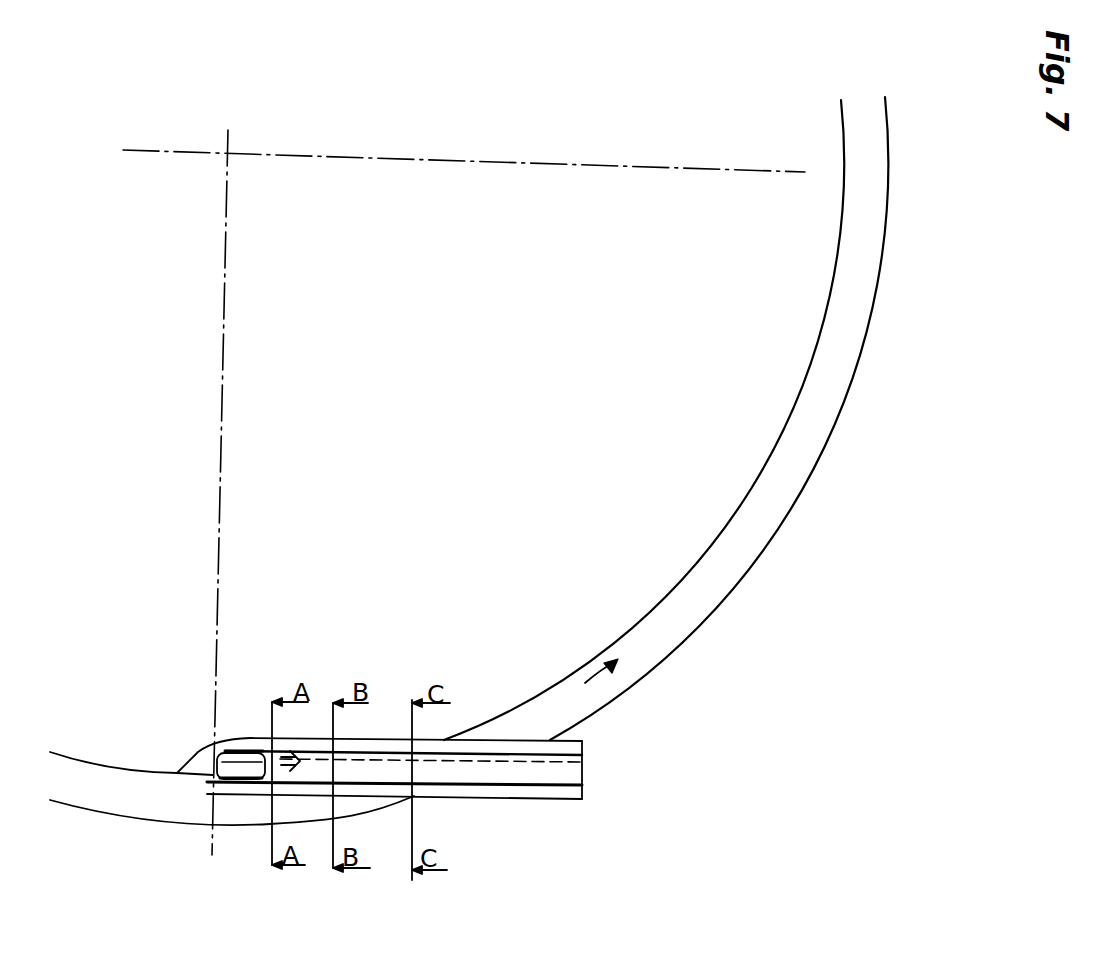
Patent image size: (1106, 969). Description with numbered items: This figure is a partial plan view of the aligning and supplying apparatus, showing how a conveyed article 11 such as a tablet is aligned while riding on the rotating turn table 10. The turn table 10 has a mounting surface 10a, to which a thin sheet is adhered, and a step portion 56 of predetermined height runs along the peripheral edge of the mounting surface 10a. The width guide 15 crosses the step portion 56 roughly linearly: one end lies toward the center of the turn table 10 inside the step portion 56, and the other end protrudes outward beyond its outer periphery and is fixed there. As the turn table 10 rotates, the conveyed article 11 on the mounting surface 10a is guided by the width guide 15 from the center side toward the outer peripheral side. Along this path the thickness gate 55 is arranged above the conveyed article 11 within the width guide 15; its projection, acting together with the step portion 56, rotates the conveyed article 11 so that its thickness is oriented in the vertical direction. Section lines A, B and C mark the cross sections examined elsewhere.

The turn table 10 is at (893, 247).
The mounting surface 10a is at (800, 297).
The step portion 56 is at (840, 357).
The conveyed article 11 is at (243, 763).
The width guide 15 is at (492, 793).
The thickness gate 55 is at (535, 775).